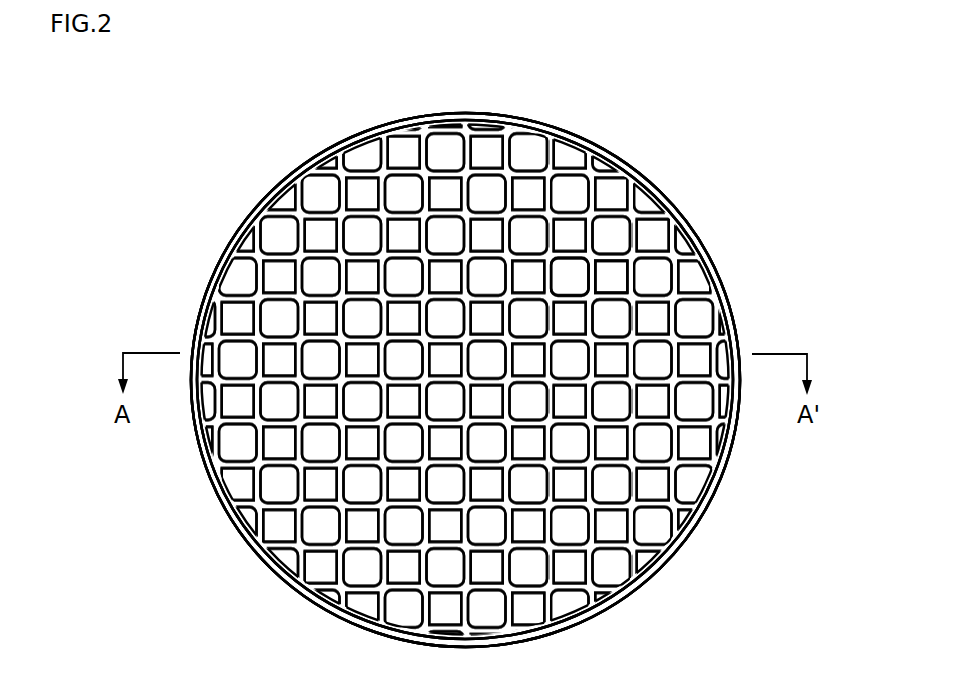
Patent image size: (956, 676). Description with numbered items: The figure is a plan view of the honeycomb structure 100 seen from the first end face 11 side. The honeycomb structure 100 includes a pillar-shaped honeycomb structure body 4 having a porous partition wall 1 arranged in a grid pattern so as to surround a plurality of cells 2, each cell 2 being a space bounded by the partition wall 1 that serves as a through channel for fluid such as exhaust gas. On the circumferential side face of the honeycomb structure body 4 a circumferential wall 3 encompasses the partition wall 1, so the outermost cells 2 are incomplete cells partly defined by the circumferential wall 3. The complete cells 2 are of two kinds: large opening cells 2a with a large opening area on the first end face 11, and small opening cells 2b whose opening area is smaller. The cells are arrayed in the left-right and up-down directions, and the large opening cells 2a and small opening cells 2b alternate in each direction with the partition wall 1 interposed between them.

The honeycomb structure 100 is at (800, 78).
The first end face 11 is at (270, 163).
The partition wall 1 is at (590, 218).
The cells 2 is at (572, 278).
The large opening cells 2a is at (572, 278).
The small opening cells 2b is at (615, 278).
The circumferential wall 3 is at (680, 547).
The honeycomb structure body 4 is at (740, 313).